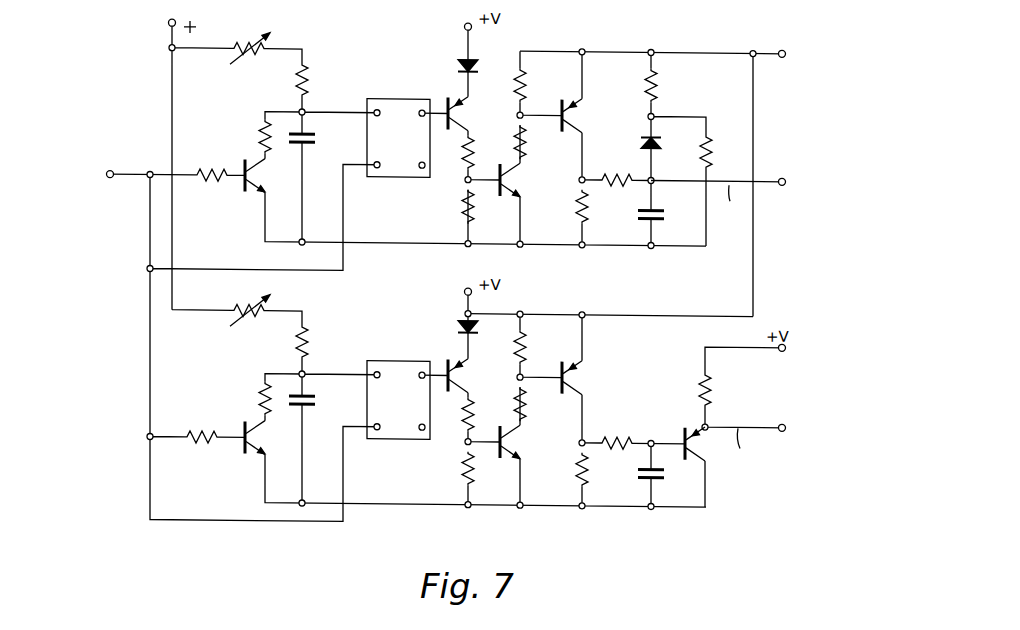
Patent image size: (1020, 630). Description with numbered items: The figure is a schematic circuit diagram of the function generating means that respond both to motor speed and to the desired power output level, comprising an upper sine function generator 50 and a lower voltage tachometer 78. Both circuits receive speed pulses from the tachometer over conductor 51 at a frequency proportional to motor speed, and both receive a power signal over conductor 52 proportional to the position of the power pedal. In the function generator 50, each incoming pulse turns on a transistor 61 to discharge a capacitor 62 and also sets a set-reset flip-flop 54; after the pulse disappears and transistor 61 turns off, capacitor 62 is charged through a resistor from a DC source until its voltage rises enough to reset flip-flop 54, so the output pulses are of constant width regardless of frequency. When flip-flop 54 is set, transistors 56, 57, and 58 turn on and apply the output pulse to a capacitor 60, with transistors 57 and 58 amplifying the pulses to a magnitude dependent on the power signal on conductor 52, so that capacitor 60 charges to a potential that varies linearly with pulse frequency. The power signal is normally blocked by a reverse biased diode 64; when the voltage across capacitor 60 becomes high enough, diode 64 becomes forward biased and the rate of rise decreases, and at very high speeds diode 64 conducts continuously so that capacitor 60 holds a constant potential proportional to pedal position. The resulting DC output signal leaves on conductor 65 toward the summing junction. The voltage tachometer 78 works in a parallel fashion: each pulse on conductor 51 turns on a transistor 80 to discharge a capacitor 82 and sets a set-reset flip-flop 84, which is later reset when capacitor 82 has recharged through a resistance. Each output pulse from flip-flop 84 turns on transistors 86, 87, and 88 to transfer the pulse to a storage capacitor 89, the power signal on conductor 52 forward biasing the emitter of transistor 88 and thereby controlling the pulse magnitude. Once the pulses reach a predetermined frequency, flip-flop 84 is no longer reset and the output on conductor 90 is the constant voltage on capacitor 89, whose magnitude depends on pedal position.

The function generator 50 is at (414, 214).
The conductor 51 is at (134, 171).
The conductor 52 is at (700, 46).
The flip-flop 54 is at (398, 138).
The transistor 56 is at (448, 95).
The transistor 57 is at (502, 195).
The transistor 58 is at (563, 128).
The capacitor 60 is at (660, 206).
The transistor 61 is at (246, 193).
The capacitor 62 is at (313, 131).
The diode 64 is at (658, 140).
The conductor 65 is at (766, 172).
The voltage tachometer 78 is at (414, 477).
The transistor 80 is at (246, 458).
The capacitor 82 is at (313, 394).
The flip-flop 84 is at (398, 400).
The transistor 86 is at (448, 357).
The transistor 87 is at (502, 458).
The transistor 88 is at (563, 356).
The storage capacitor 89 is at (648, 470).
The conductor 90 is at (710, 420).